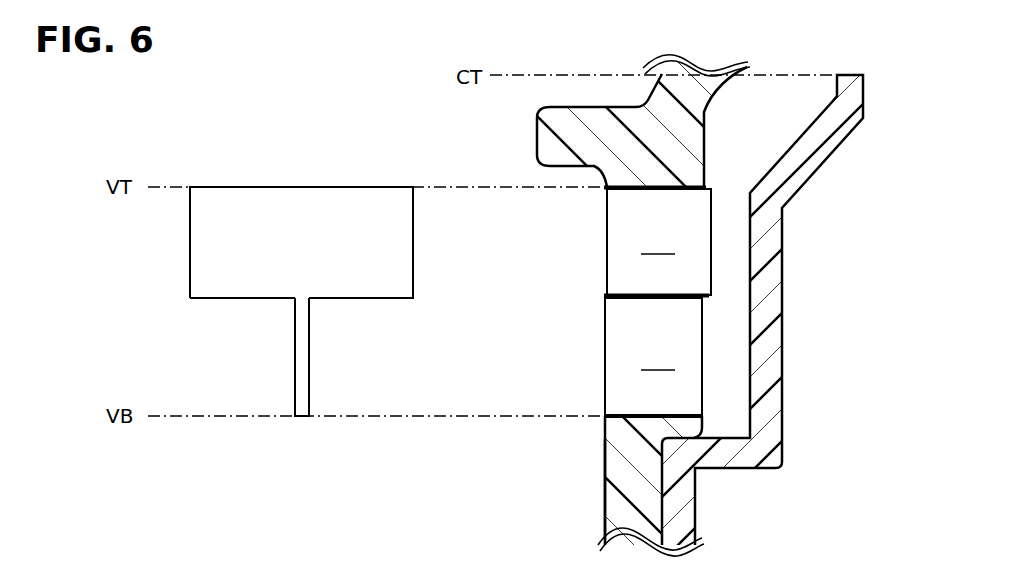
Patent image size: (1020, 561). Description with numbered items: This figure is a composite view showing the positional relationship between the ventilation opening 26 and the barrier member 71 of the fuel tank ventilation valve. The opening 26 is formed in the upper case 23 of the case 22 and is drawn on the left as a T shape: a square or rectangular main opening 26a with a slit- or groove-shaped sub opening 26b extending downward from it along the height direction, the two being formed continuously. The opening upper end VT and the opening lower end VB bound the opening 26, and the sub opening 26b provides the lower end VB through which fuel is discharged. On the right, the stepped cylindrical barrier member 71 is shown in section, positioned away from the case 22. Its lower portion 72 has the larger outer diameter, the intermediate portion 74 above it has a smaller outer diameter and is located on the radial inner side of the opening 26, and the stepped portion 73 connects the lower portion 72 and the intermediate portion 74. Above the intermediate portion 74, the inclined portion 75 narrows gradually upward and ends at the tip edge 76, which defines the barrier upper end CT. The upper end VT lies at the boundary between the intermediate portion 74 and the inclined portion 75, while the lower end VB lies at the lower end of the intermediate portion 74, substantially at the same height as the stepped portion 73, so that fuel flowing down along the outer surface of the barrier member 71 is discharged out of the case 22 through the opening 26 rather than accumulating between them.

The case 22 is at (578, 452).
The upper case 23 is at (604, 502).
The opening 26 is at (388, 301).
The main opening 26a is at (378, 297).
The sub opening 26b is at (296, 393).
The barrier member 71 is at (795, 242).
The lower portion 72 is at (660, 498).
The stepped portion 73 is at (712, 438).
The intermediate portion 74 is at (745, 312).
The inclined portion 75 is at (780, 155).
The tip edge 76 is at (848, 74).